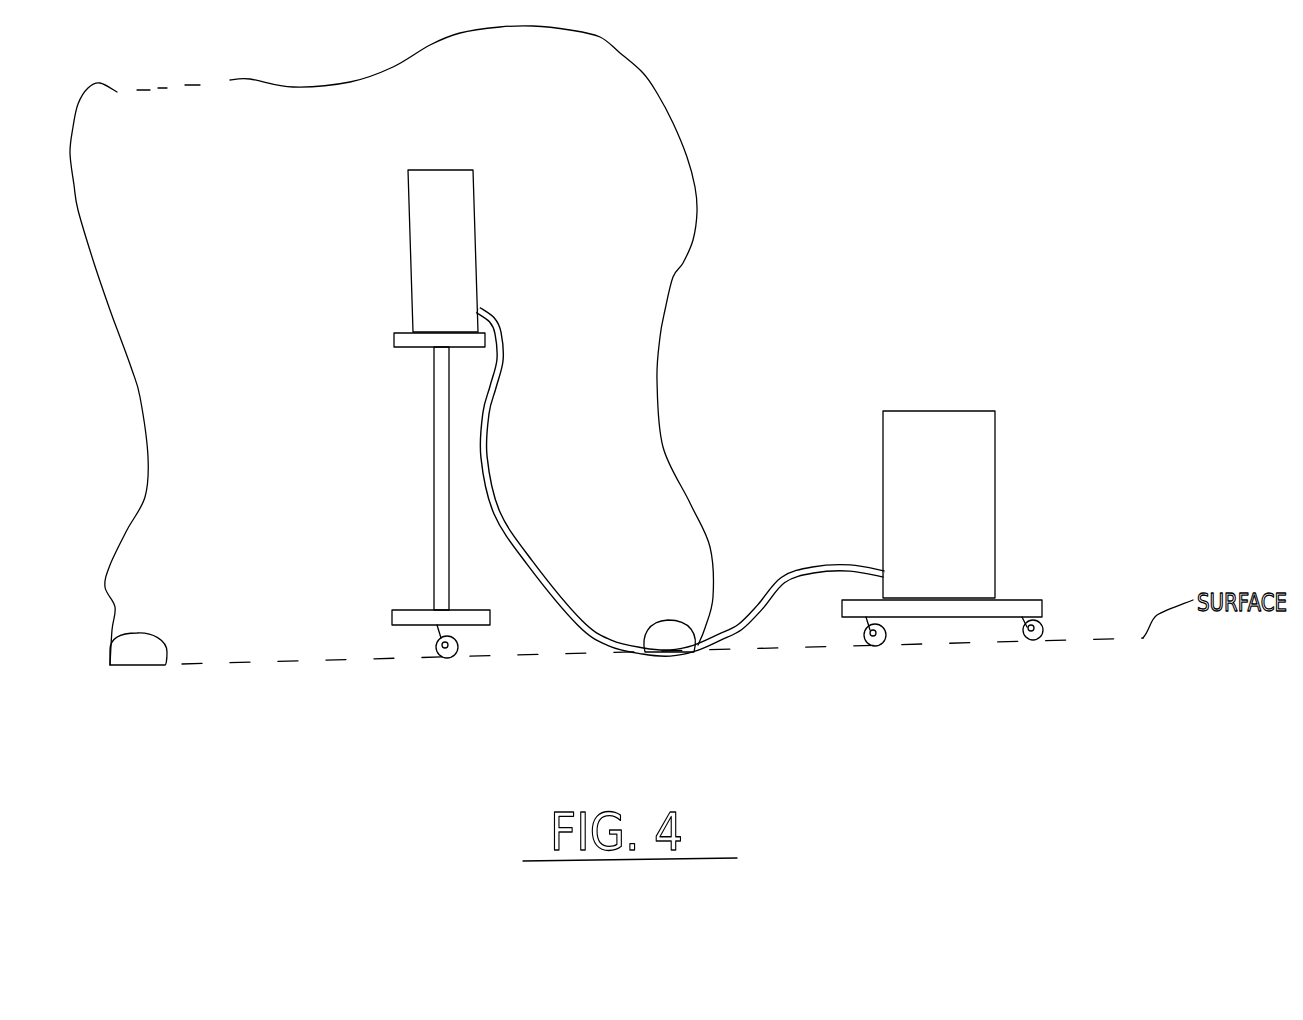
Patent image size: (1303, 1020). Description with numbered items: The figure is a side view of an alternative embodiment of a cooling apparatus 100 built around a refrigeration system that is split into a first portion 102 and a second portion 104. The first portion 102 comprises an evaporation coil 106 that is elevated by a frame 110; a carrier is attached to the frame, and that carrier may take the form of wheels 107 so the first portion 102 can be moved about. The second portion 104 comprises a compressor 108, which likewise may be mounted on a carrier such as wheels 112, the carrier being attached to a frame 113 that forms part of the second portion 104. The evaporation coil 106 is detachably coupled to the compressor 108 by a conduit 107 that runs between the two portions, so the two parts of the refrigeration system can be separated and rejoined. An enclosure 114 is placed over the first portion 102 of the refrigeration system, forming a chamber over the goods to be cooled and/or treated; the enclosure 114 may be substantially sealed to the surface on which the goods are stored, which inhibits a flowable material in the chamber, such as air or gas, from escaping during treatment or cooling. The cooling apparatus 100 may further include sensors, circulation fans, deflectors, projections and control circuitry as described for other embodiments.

The cooling apparatus 100 is at (899, 184).
The first portion 102 is at (391, 455).
The second portion 104 is at (992, 552).
The evaporation coil 106 is at (409, 240).
The conduit 107 is at (820, 567).
The compressor 108 is at (993, 452).
The frame 110 is at (440, 483).
The wheels 112 is at (1043, 635).
The frame 113 is at (940, 610).
The enclosure 114 is at (650, 83).